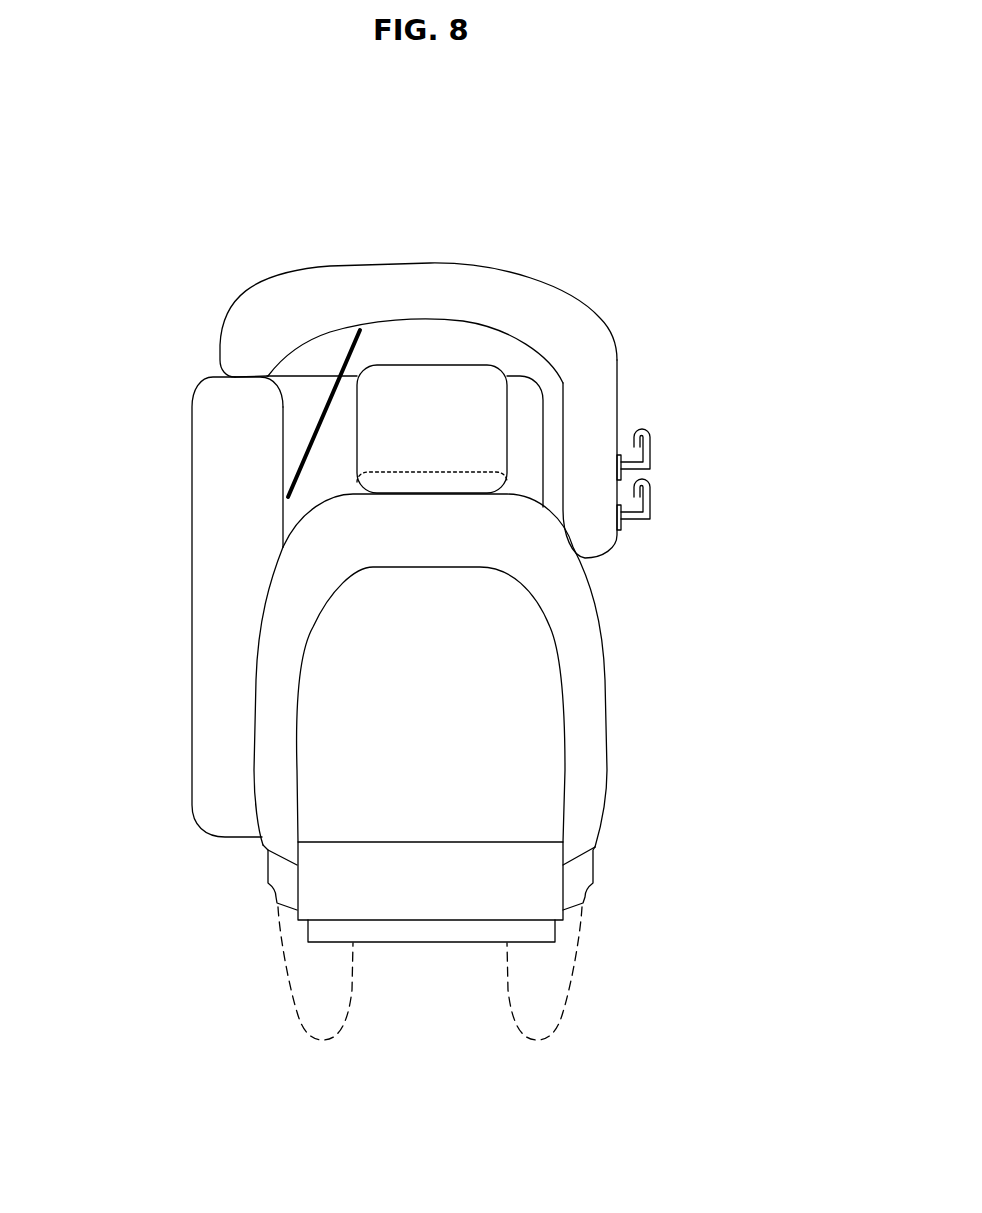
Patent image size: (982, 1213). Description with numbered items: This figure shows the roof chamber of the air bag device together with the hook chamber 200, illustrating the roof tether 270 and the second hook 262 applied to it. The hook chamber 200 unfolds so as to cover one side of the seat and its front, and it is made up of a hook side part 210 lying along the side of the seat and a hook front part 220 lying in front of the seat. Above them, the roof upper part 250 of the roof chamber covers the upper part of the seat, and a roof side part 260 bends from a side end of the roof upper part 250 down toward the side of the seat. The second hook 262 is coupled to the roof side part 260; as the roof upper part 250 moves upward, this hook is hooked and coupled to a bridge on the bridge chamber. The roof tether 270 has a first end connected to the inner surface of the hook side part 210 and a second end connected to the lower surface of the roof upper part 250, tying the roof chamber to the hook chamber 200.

The hook chamber 200 is at (187, 634).
The hook side part 210 is at (210, 561).
The hook front part 220 is at (520, 393).
The roof upper part 250 is at (407, 283).
The roof side part 260 is at (598, 390).
The second hook 262 is at (657, 439).
The roof tether 270 is at (322, 406).